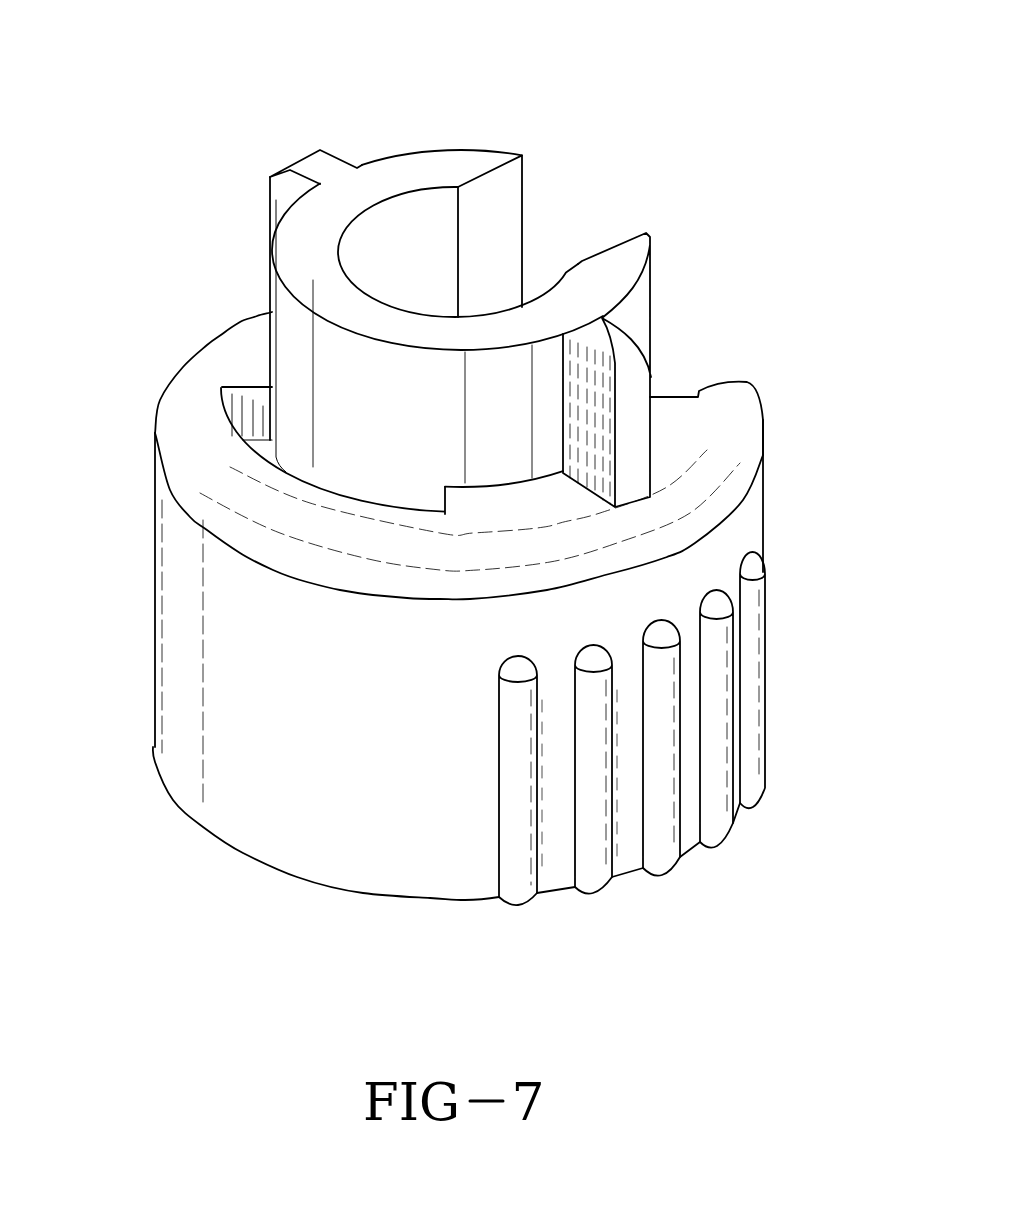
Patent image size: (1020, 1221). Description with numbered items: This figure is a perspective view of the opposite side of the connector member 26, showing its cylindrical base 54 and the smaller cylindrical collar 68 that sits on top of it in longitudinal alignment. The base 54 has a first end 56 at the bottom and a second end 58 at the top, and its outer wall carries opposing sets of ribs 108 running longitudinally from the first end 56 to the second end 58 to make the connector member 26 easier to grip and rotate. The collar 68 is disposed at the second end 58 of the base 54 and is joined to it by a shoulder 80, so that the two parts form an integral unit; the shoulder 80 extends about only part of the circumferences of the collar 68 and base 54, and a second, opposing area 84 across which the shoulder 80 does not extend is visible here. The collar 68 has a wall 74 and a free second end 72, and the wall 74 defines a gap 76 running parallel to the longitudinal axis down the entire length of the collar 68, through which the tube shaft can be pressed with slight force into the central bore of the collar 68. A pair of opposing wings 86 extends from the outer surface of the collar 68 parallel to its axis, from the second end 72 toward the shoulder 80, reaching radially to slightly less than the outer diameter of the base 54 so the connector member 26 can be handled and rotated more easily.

The connector member 26 is at (643, 77).
The cylindrical base 54 is at (150, 678).
The first end 56 is at (465, 898).
The second end 58 is at (764, 462).
The cylindrical collar 68 is at (655, 306).
The second end 72 is at (487, 153).
The wall 74 is at (347, 387).
The gap 76 is at (540, 250).
The shoulder 80 is at (470, 498).
The second opposing area 84 is at (340, 487).
The wings 86 is at (285, 190).
The ribs 108 is at (720, 673).